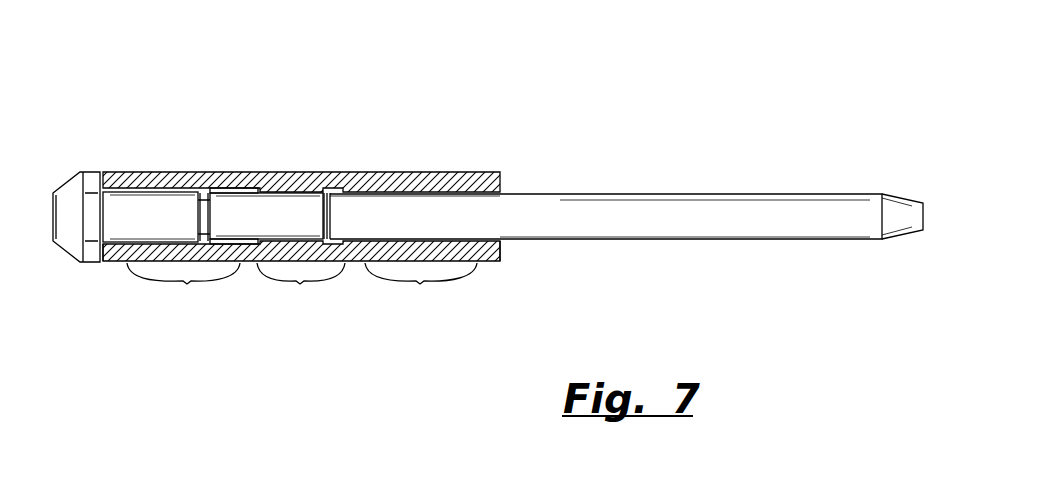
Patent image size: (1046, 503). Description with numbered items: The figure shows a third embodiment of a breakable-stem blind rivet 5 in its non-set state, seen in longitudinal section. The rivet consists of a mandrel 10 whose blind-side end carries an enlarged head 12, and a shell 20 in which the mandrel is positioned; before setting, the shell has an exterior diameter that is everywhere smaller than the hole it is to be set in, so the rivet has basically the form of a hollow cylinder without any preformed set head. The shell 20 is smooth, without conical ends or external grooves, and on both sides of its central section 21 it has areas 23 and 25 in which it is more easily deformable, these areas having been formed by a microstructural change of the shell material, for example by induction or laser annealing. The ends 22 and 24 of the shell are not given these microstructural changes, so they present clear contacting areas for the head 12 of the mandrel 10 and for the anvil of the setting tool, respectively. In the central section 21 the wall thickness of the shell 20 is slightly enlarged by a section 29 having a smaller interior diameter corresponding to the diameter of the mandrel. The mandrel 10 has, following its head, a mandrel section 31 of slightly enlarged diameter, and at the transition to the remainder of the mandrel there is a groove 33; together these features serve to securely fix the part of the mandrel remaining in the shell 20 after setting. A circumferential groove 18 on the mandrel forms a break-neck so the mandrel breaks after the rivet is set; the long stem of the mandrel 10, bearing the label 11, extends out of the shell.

The breakable-stem blind rivet 5 is at (318, 100).
The mandrel 10 is at (456, 225).
The shaft 11 is at (717, 212).
The head 12 is at (93, 172).
The circumferential groove 18 is at (327, 190).
The shell 20 is at (435, 173).
The central section 21 is at (300, 284).
The end of the shell 22 is at (113, 263).
The more easily deformable area 23 is at (187, 284).
The end of the shell 24 is at (500, 262).
The more easily deformable area 25 is at (420, 284).
The section having a smaller interior diameter 29 is at (292, 190).
The mandrel section 31 is at (153, 222).
The groove 33 is at (207, 212).